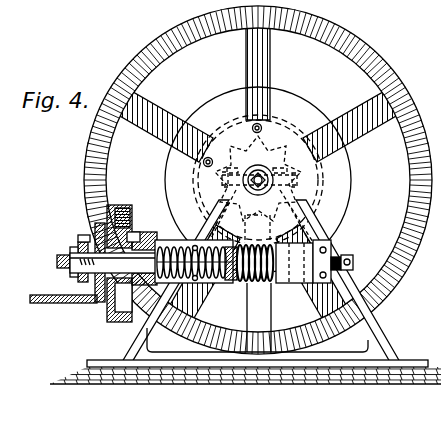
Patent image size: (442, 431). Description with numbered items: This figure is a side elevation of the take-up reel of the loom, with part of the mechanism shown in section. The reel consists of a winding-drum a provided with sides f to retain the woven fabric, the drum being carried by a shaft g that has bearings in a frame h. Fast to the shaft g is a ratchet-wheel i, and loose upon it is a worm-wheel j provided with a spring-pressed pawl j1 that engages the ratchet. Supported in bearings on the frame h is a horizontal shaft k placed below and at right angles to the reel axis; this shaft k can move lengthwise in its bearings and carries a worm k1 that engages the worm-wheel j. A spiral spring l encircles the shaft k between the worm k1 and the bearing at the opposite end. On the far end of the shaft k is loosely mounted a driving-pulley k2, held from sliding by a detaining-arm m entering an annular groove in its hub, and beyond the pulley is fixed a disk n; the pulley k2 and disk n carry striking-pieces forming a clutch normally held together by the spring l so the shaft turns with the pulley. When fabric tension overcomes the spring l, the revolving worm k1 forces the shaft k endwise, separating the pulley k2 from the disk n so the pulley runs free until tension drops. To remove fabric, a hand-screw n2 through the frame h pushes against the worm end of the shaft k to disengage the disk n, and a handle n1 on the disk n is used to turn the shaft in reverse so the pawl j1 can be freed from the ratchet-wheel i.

The winding-drum a is at (258, 180).
The sides f is at (421, 180).
The shaft g is at (258, 184).
The frame h is at (129, 342).
The ratchet-wheel i is at (268, 156).
The worm-wheel j is at (250, 226).
The spring-pressed pawl j1 is at (236, 130).
The horizontal shaft k is at (107, 262).
The worm k1 is at (268, 285).
The driving-pulley k2 is at (124, 206).
The spiral spring l is at (213, 292).
The detaining-arm m is at (153, 232).
The disk n is at (93, 305).
The handle n1 is at (38, 296).
The hand-screw n2 is at (353, 264).